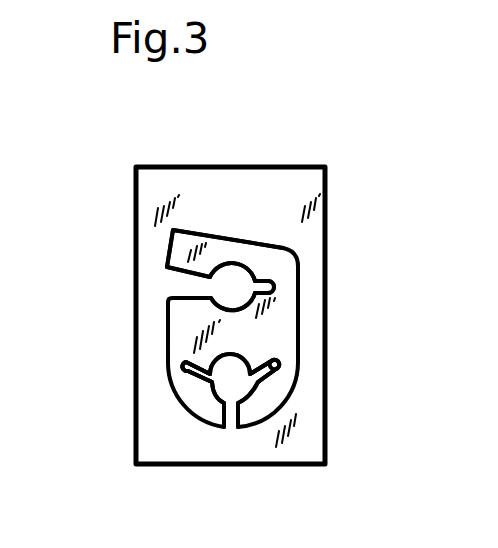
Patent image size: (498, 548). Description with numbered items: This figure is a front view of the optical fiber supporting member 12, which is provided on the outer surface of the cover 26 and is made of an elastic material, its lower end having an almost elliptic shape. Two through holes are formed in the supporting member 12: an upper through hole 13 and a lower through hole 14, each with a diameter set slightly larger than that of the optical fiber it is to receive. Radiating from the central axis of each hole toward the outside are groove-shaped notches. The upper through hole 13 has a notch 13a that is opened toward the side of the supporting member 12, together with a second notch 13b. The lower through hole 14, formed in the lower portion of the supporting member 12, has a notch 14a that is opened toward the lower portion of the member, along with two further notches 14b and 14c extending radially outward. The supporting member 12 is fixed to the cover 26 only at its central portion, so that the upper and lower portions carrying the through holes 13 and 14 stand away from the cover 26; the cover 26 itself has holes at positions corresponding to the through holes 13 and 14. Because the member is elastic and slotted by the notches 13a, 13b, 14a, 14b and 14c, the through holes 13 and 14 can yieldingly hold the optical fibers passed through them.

The cover 26 is at (196, 178).
The optical fiber supporting member 12 is at (283, 337).
The through hole 13 is at (239, 277).
The notch 13a is at (178, 283).
The notch 13b is at (270, 283).
The through hole 14 is at (238, 388).
The notch 14a is at (232, 423).
The notch 14b is at (186, 371).
The notch 14c is at (270, 366).